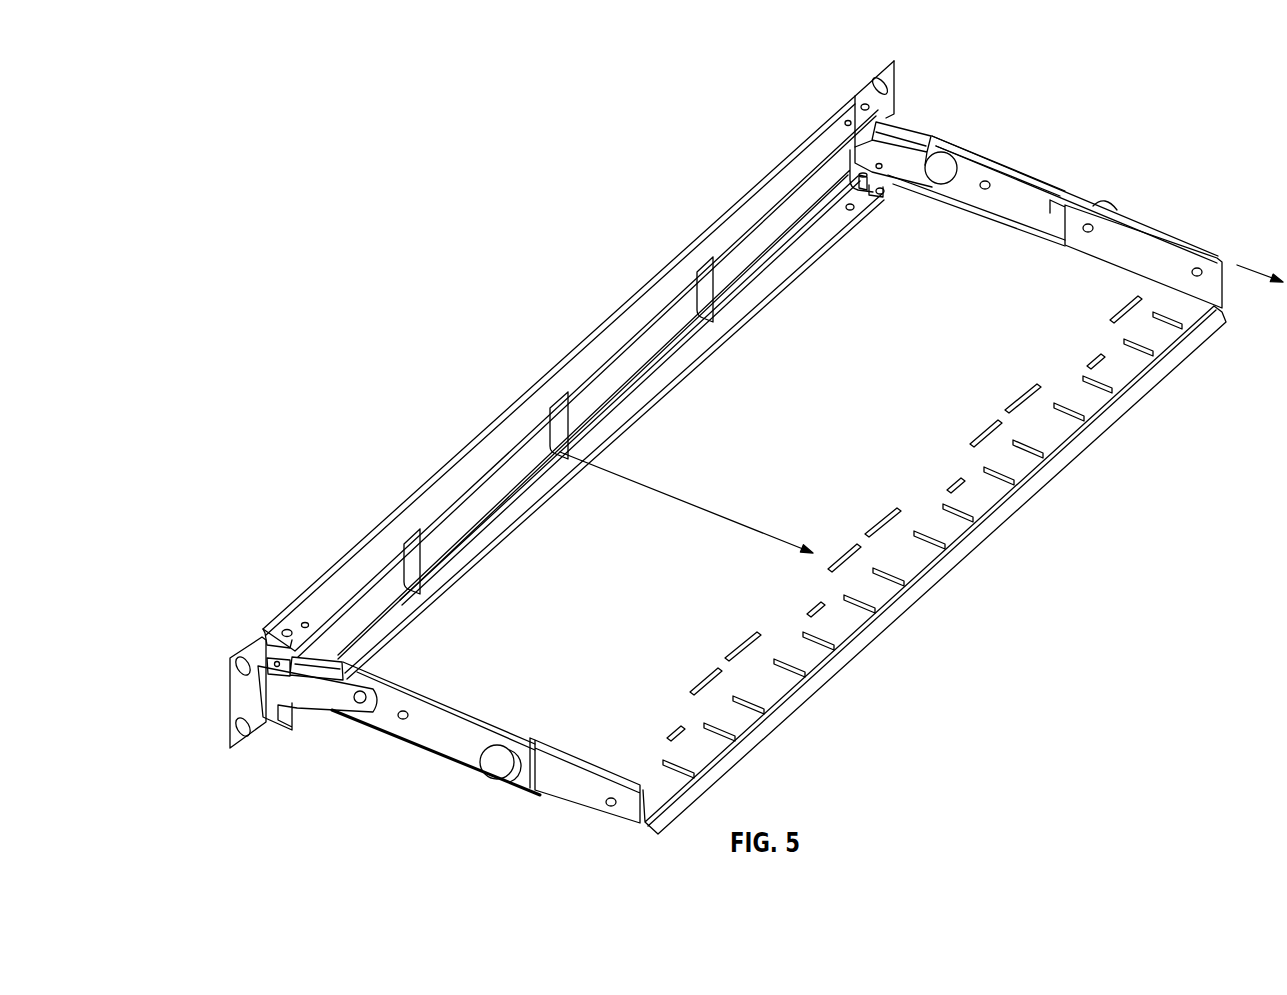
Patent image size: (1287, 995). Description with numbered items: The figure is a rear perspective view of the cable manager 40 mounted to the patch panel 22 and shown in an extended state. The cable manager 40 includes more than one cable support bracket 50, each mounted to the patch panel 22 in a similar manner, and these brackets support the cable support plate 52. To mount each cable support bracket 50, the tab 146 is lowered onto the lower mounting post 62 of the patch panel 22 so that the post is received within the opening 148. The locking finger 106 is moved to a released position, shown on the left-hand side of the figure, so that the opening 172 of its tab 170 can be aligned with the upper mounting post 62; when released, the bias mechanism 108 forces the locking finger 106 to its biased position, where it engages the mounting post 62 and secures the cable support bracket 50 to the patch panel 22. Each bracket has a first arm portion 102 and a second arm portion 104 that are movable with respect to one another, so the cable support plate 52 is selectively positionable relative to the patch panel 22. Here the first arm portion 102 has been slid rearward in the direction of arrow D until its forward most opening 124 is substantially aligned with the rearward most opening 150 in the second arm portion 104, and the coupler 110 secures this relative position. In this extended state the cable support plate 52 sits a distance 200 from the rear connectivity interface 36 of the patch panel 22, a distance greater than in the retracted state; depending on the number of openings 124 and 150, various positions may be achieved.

The patch panel 22 is at (613, 334).
The rear connectivity interface 36 is at (572, 420).
The cable manager 40 is at (1134, 434).
The cable support bracket 50 is at (1050, 121).
The cable support plate 52 is at (990, 503).
The mounting post 62 is at (882, 192).
The first arm portion 102 is at (1120, 253).
The second arm portion 104 is at (1040, 215).
The locking finger 106 is at (907, 130).
The bias mechanism 108 is at (962, 160).
The coupler 110 is at (490, 772).
The opening 124 is at (1083, 232).
The tab 146 is at (882, 195).
The opening 148 is at (859, 173).
The opening 150 is at (993, 187).
The tab 170 is at (250, 717).
The opening 172 is at (262, 666).
The distance 200 is at (688, 499).
The direction of arrow D is at (1257, 280).